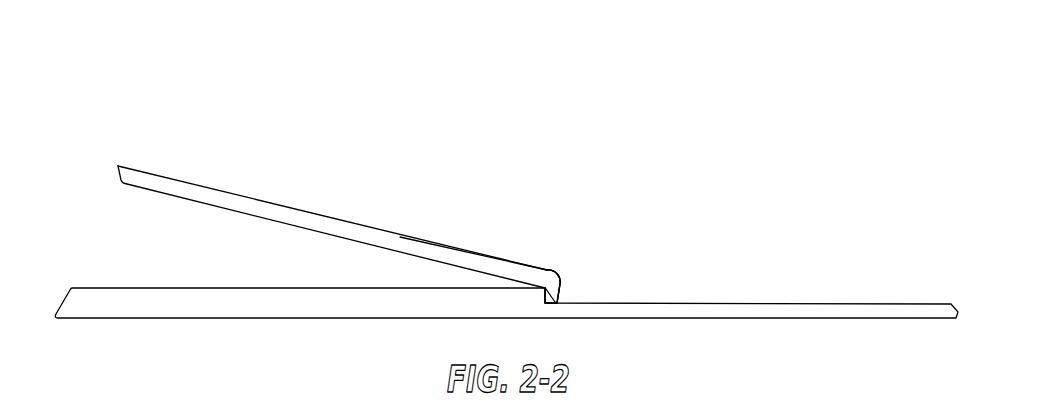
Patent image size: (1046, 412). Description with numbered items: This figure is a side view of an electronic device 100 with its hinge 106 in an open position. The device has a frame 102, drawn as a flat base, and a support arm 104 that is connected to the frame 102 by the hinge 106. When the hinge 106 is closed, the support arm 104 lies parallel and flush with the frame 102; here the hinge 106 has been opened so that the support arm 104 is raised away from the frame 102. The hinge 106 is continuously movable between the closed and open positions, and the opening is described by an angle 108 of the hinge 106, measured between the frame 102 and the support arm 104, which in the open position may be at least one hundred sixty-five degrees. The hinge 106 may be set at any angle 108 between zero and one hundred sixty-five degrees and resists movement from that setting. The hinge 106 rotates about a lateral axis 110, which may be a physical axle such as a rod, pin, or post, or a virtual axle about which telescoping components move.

The electronic device 100 is at (845, 209).
The frame 102 is at (786, 310).
The support arm 104 is at (208, 195).
The hinge 106 is at (528, 237).
The angle 108 is at (588, 303).
The lateral axis 110 is at (556, 303).